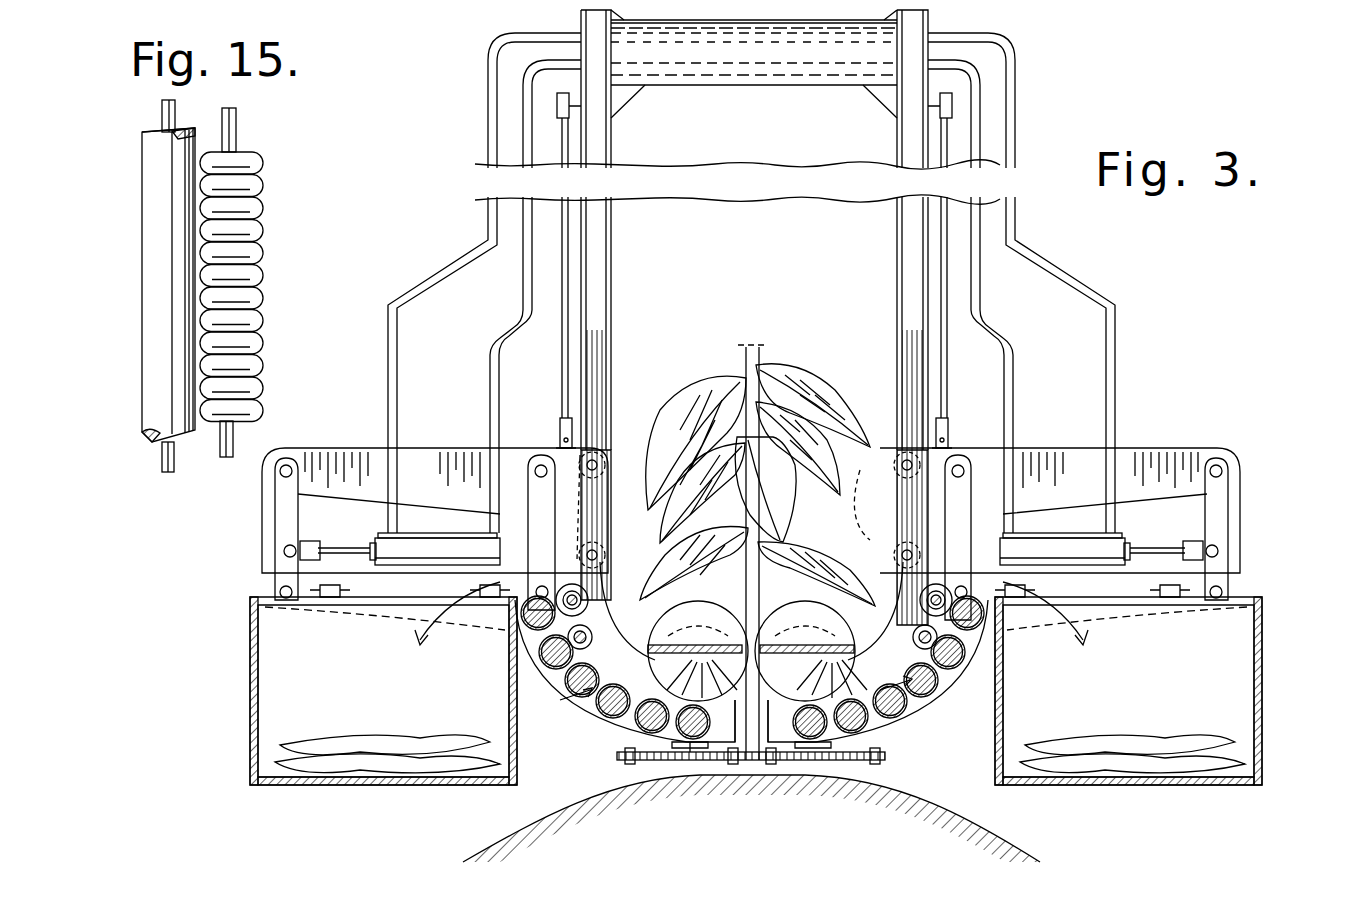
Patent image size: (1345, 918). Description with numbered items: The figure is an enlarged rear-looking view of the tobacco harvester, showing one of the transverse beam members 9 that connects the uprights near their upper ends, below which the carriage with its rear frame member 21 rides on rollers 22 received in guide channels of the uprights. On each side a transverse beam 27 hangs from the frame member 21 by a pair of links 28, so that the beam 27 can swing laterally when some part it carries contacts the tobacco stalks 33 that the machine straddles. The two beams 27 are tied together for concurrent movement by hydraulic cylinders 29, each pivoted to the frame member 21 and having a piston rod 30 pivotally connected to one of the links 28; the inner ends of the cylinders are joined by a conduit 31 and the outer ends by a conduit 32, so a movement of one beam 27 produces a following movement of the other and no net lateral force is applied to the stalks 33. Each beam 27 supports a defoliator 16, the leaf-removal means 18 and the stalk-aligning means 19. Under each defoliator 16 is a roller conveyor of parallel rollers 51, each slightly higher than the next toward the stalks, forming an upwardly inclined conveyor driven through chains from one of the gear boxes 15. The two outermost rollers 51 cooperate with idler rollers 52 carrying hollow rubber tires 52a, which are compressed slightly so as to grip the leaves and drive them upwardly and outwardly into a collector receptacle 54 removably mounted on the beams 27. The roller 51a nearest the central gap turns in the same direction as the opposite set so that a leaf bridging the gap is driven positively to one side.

In FIG. 3, the transverse beam member 9 is at (745, 85).
In FIG. 3, the gear box 15 is at (612, 580).
In FIG. 3, the defoliator 16 is at (732, 598).
In FIG. 3, the leaf-removal means 18 is at (958, 722).
In FIG. 3, the stalk-aligning means 19 is at (885, 776).
In FIG. 3, the rear frame member 21 is at (430, 460).
In FIG. 3, the rollers 22 is at (608, 455).
In FIG. 3, the transverse beam 27 is at (552, 690).
In FIG. 3, the links 28 is at (275, 518).
In FIG. 3, the hydraulic cylinder 29 is at (420, 552).
In FIG. 3, the piston rod 30 is at (340, 548).
In FIG. 3, the conduit 31 is at (982, 312).
In FIG. 3, the conduit 32 is at (1055, 280).
In FIG. 3, the tobacco plants 33 is at (760, 510).
In FIG. 15, the rollers 51 is at (155, 308).
In FIG. 3, the rollers 51 is at (555, 630).
In FIG. 3, the roller nearest the central gap 51a is at (690, 752).
In FIG. 15, the idler rollers 52 is at (238, 440).
In FIG. 15, the hollow rubber tires 52a is at (245, 270).
In FIG. 3, the hollow rubber tires 52a is at (590, 598).
In FIG. 3, the collector receptacle 54 is at (250, 700).